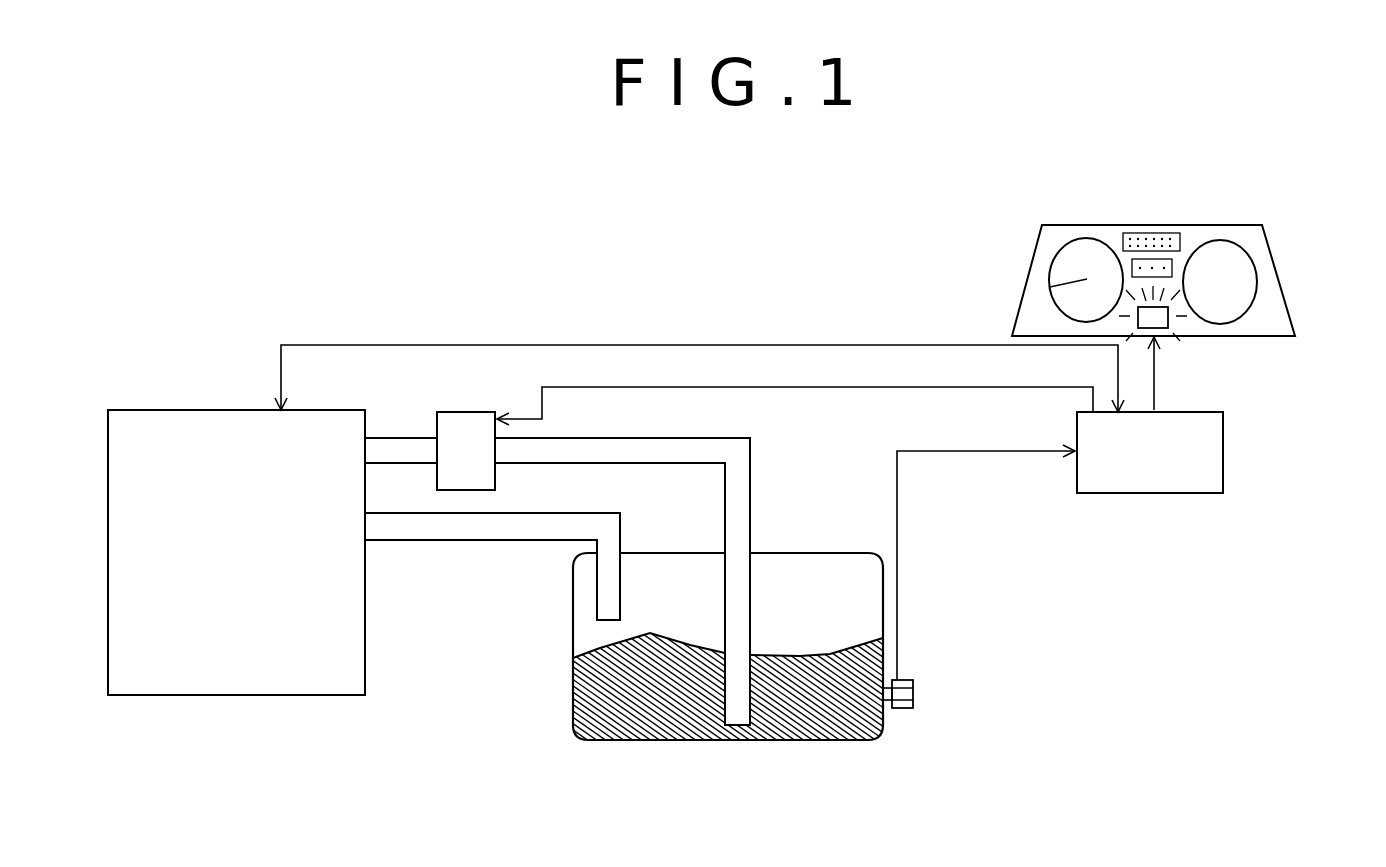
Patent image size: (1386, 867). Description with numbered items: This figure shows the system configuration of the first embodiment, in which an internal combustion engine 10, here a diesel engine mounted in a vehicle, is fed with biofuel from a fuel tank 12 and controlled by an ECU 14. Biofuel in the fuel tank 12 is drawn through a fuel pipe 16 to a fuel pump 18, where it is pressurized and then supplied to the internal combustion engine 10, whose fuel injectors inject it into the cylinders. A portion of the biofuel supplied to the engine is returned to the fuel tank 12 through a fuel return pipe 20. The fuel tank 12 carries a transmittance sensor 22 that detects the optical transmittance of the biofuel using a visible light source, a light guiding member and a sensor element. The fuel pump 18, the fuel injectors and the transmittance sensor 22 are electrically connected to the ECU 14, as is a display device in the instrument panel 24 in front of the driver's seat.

The internal combustion engine 10 is at (168, 410).
The fuel tank 12 is at (810, 553).
The ECU 14 is at (1190, 412).
The fuel pipe 16 is at (650, 438).
The fuel pump 18 is at (437, 423).
The fuel return pipe 20 is at (528, 513).
The transmittance sensor 22 is at (903, 710).
The instrument panel 24 is at (1280, 278).